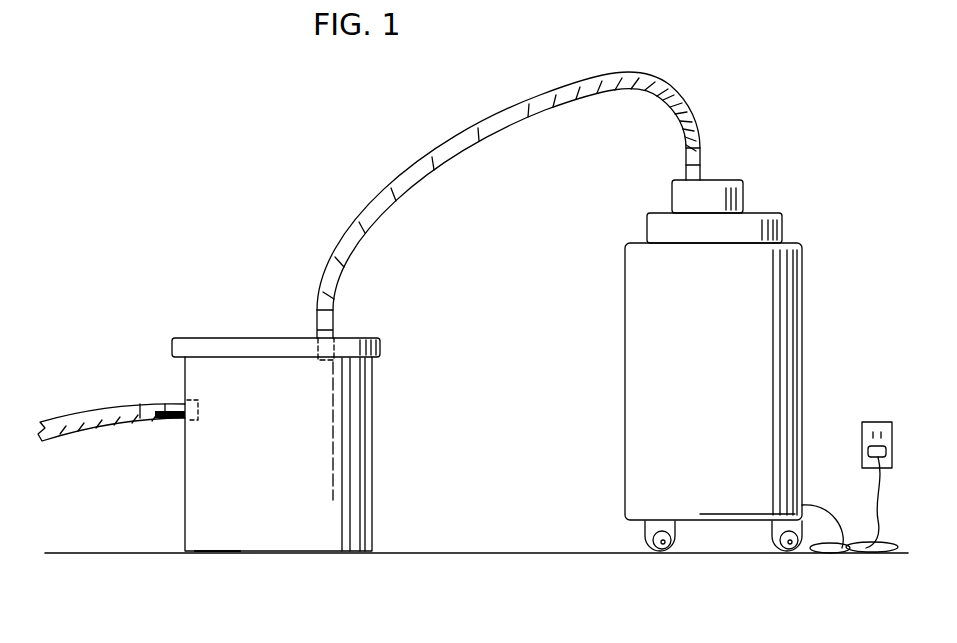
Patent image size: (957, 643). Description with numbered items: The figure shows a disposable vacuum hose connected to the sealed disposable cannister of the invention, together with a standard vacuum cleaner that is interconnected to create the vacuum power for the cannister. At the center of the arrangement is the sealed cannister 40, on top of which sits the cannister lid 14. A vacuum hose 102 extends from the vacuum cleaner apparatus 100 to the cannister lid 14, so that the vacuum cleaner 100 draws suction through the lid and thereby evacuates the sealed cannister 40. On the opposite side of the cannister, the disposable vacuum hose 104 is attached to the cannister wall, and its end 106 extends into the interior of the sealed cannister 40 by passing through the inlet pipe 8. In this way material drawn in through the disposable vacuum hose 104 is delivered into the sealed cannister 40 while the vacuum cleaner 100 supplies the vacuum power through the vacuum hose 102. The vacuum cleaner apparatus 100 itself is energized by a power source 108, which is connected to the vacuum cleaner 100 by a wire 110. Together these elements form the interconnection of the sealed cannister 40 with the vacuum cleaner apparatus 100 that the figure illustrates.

The inlet pipe 8 is at (178, 418).
The cannister lid 14 is at (255, 338).
The sealed cannister 40 is at (363, 497).
The vacuum cleaner apparatus 100 is at (640, 316).
The vacuum hose 102 is at (388, 175).
The disposable vacuum hose 104 is at (135, 405).
The end of disposable vacuum hose 106 is at (200, 418).
The power source 108 is at (875, 420).
The wire 110 is at (843, 556).